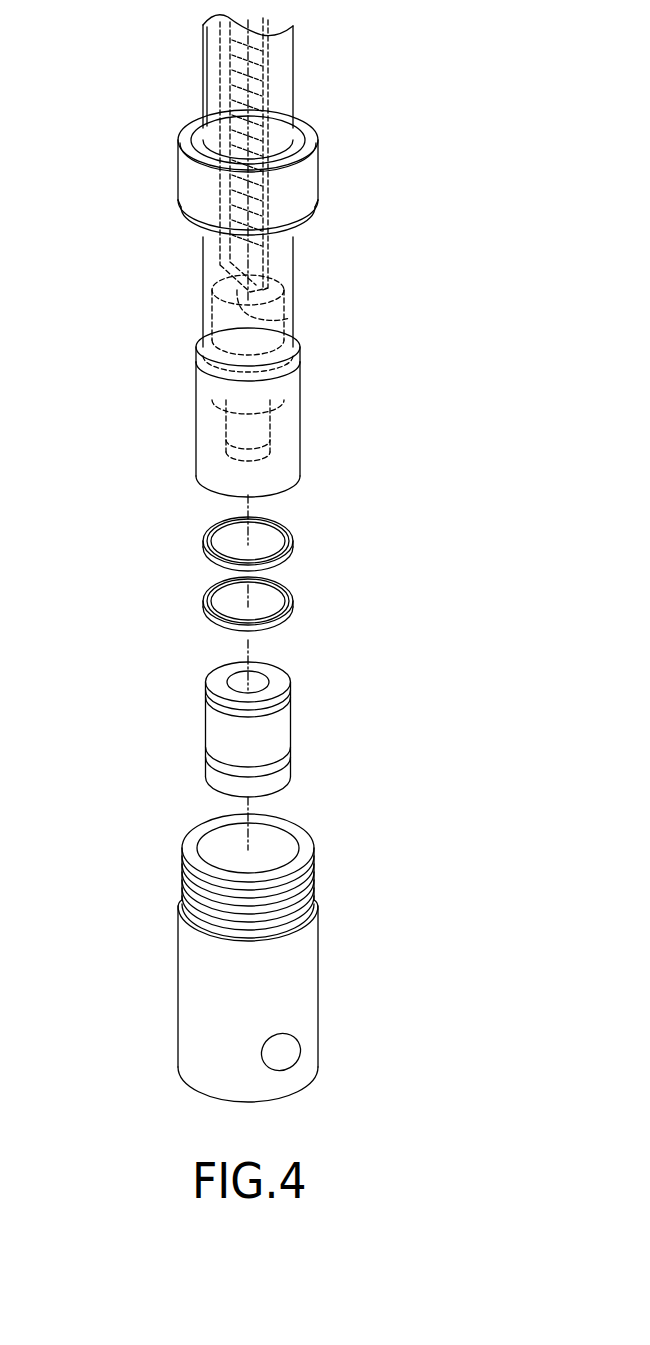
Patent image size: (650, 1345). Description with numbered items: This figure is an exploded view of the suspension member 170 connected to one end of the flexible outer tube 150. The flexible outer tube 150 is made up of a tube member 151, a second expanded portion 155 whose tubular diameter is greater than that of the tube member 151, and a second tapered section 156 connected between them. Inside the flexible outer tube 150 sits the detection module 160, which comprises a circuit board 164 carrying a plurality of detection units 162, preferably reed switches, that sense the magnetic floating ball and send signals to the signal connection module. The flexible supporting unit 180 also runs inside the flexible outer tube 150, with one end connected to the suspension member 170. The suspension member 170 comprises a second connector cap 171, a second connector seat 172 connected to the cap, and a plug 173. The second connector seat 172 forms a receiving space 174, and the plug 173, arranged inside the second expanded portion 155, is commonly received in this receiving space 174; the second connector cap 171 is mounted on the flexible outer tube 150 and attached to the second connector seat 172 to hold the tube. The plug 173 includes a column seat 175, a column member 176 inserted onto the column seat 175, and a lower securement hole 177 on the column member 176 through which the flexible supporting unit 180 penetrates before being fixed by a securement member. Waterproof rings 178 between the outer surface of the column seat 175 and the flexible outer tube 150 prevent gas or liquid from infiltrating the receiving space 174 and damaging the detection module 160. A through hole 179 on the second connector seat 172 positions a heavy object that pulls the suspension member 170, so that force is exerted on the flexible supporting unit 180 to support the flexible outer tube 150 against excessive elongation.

The flexible outer tube 150 is at (102, 275).
The tube member 151 is at (210, 268).
The second expanded portion 155 is at (200, 438).
The second tapered section 156 is at (200, 345).
The detection module 160 is at (122, 33).
The detection unit 162 is at (237, 63).
The circuit board 164 is at (225, 83).
The suspension member 170 is at (481, 245).
The second connector cap 171 is at (312, 187).
The second connector seat 172 is at (313, 987).
The plug 173 is at (102, 517).
The receiving space 174 is at (220, 848).
The column seat 175 is at (207, 730).
The column member 176 is at (227, 450).
The lower securement hole 177 is at (287, 320).
The waterproof ring 178 is at (293, 600).
The through hole 179 is at (283, 1052).
The flexible supporting unit 180 is at (292, 350).